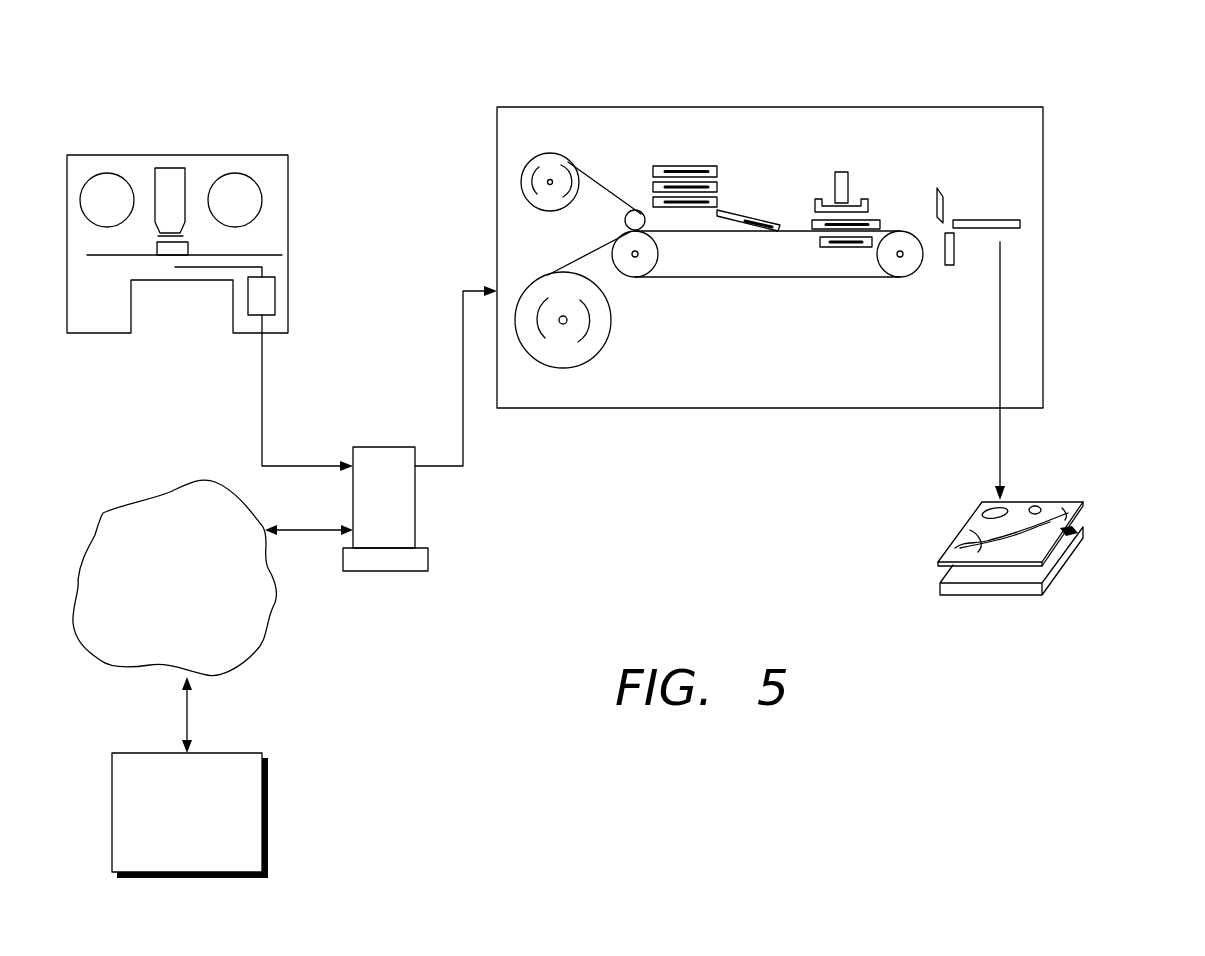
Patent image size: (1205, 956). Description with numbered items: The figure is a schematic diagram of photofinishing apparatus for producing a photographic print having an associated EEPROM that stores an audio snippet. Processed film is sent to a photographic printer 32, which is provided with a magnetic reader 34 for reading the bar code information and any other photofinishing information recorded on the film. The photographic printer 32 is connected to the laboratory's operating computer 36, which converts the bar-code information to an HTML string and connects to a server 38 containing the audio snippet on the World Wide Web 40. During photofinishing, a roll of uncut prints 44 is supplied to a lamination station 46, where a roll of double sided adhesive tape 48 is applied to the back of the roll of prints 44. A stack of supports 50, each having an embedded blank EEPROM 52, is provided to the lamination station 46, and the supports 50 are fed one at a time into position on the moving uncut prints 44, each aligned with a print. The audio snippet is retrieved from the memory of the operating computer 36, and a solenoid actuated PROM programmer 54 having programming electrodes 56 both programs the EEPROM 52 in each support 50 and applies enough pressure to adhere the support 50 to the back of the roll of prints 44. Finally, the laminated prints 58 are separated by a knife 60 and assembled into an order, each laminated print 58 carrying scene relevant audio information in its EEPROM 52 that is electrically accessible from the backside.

The photographic printer 32 is at (163, 155).
The magnetic reader 34 is at (175, 248).
The operating computer 36 is at (370, 457).
The server 38 is at (242, 753).
The World Wide Web 40 is at (120, 520).
The roll of uncut prints 44 is at (592, 312).
The lamination station 46 is at (860, 107).
The roll of double sided adhesive tape 48 is at (558, 165).
The support 50 is at (672, 172).
The EEPROM 52 is at (697, 168).
The solenoid actuated PROM programmer 54 is at (843, 187).
The programming electrodes 56 is at (865, 208).
The laminated print 58 is at (975, 222).
The knife 60 is at (945, 188).